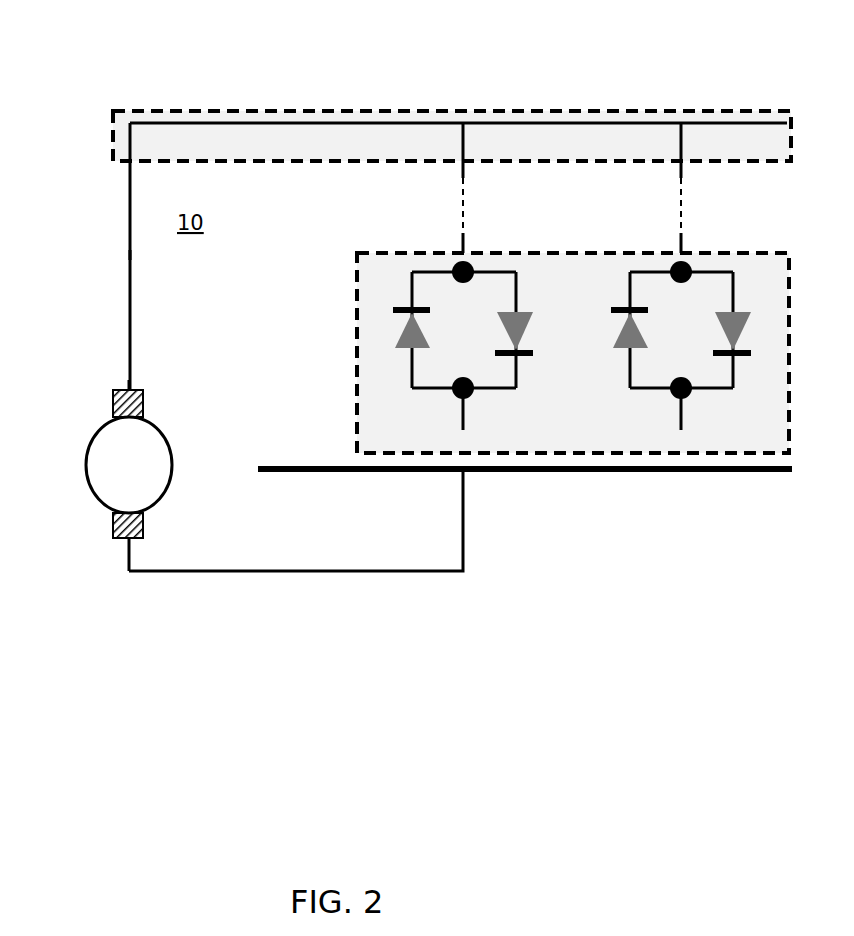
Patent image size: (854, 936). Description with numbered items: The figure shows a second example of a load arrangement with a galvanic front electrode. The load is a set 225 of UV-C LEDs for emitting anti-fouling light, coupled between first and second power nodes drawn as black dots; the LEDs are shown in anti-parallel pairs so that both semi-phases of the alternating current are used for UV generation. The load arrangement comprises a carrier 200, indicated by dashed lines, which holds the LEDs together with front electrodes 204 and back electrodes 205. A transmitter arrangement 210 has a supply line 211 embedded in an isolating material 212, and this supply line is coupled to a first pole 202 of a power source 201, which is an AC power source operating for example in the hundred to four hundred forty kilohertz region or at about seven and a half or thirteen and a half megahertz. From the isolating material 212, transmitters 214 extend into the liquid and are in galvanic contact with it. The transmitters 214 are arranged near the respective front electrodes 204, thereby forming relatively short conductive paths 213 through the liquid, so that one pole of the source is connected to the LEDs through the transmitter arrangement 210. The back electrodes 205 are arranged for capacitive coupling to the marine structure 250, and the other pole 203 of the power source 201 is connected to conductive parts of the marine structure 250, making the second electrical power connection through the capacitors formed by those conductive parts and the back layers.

The carrier 200 is at (357, 270).
The power source 201 is at (88, 450).
The first pole 202 is at (113, 402).
The other pole 203 is at (113, 528).
The front electrode 204 is at (681, 233).
The back electrode 205 is at (670, 437).
The transmitter arrangement 210 is at (298, 107).
The supply line 211 is at (130, 253).
The isolating material 212 is at (110, 133).
The conductive path 213 is at (455, 201).
The transmitter 214 is at (681, 178).
The set of UV-C LEDs 225 is at (750, 303).
The marine structure 250 is at (572, 473).